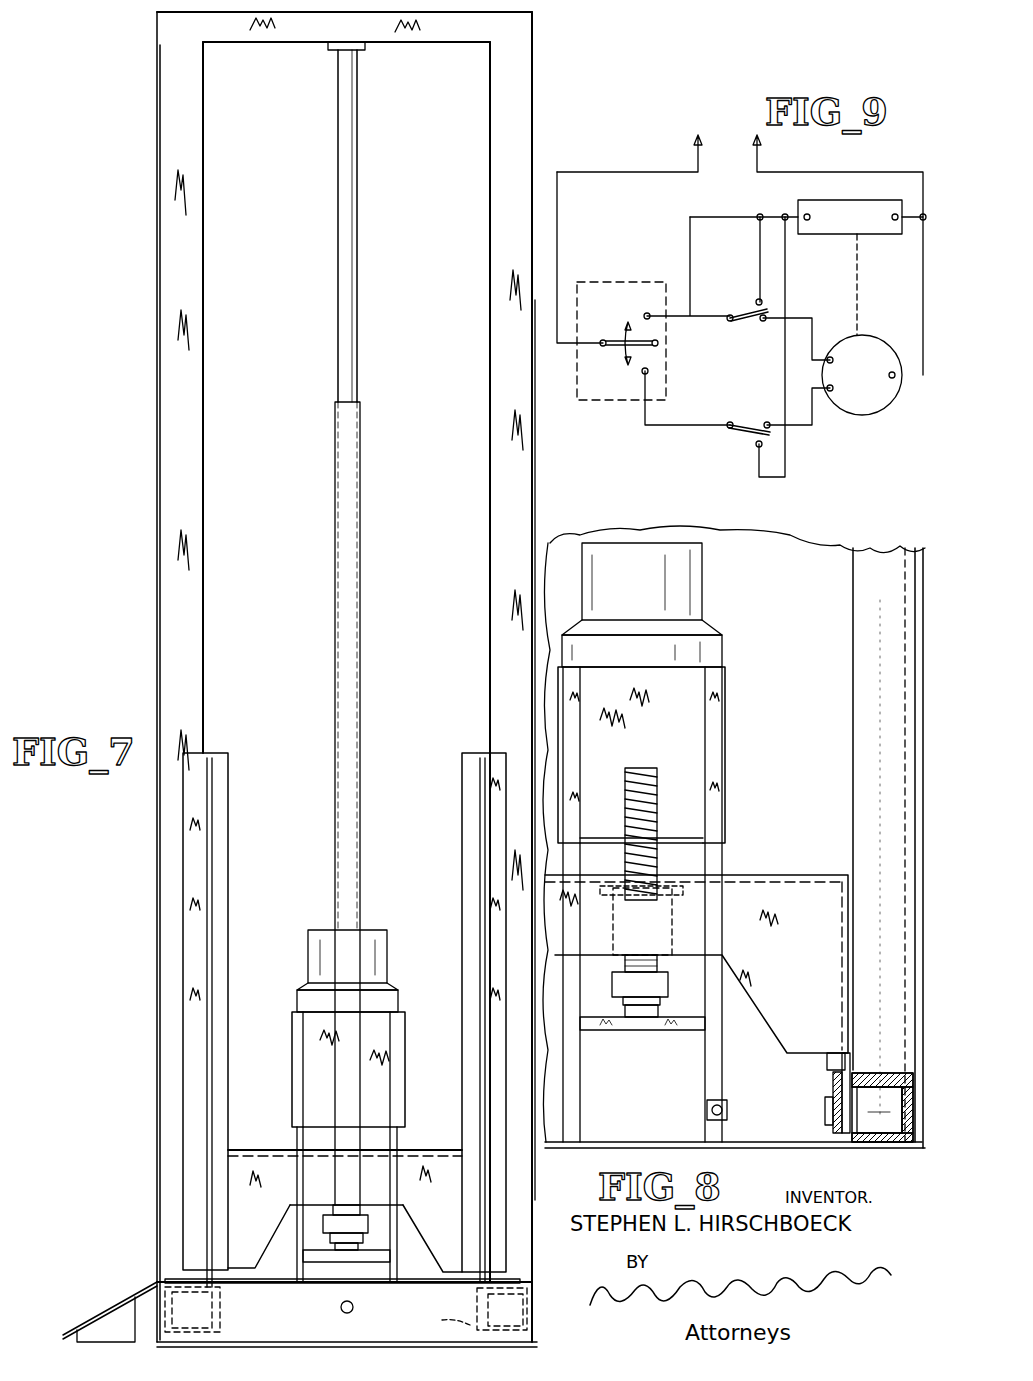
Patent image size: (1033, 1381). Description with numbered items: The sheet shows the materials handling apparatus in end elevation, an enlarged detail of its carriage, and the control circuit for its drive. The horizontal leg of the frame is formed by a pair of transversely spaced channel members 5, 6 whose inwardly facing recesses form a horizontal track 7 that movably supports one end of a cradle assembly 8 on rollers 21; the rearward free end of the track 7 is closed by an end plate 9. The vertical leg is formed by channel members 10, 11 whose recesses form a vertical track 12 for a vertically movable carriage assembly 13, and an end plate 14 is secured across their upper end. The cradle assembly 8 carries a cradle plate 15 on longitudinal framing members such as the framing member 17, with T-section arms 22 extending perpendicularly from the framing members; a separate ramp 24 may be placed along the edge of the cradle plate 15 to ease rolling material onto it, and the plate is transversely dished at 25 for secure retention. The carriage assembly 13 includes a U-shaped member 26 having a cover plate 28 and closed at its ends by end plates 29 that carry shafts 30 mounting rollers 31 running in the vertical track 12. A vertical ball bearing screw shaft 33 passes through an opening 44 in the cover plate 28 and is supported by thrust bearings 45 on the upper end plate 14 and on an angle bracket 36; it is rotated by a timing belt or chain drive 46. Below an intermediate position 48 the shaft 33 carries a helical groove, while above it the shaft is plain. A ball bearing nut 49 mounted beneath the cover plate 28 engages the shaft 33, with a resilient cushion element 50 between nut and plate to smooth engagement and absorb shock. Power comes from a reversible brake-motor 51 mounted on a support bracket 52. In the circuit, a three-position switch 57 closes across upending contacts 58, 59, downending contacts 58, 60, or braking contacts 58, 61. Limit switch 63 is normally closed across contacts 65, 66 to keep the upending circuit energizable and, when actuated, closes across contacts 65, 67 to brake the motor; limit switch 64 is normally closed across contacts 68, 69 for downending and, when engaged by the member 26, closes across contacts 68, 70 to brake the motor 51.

In FIG. 7, the channel member 5 is at (150, 1318).
In FIG. 7, the channel member 6 is at (533, 1318).
In FIG. 8, the channel member 6 is at (915, 1125).
In FIG. 7, the horizontal track 7 is at (170, 1298).
In FIG. 8, the horizontal track 7 is at (895, 1103).
In FIG. 7, the cradle assembly 8 is at (442, 1320).
In FIG. 8, the cradle assembly 8 is at (835, 1142).
In FIG. 7, the end plate 9 is at (185, 1344).
In FIG. 7, the channel member 10 is at (172, 425).
In FIG. 7, the channel member 11 is at (533, 465).
In FIG. 8, the channel member 11 is at (878, 688).
In FIG. 7, the vertical track 12 is at (205, 298).
In FIG. 8, the vertical track 12 is at (853, 625).
In FIG. 7, the carriage assembly 13 is at (436, 1152).
In FIG. 8, the carriage assembly 13 is at (770, 875).
In FIG. 7, the end plate 14 is at (455, 30).
In FIG. 7, the cradle plate 15 is at (515, 1278).
In FIG. 8, the framing member 17 is at (833, 1080).
In FIG. 7, the rollers 21 is at (210, 1312).
In FIG. 7, the T-section arms 22 is at (228, 760).
In FIG. 7, the ramp 24 is at (85, 1320).
In FIG. 7, the dished portion 25 is at (283, 1280).
In FIG. 7, the U-shaped member 26 is at (320, 1192).
In FIG. 8, the U-shaped member 26 is at (718, 924).
In FIG. 7, the cover plate 28 is at (410, 1150).
In FIG. 8, the cover plate 28 is at (820, 880).
In FIG. 8, the end plates 29 is at (840, 985).
In FIG. 8, the shafts 30 is at (825, 1110).
In FIG. 8, the rollers 31 is at (880, 1125).
In FIG. 7, the vertical ball bearing screw shaft 33 is at (345, 503).
In FIG. 8, the vertical ball bearing screw shaft 33 is at (658, 815).
In FIG. 7, the angle bracket 36 is at (392, 1258).
In FIG. 8, the angle bracket 36 is at (692, 1018).
In FIG. 8, the opening 44 is at (660, 888).
In FIG. 7, the thrust bearings 45 is at (330, 47).
In FIG. 8, the thrust bearings 45 is at (642, 1018).
In FIG. 7, the timing belt or chain drive 46 is at (368, 1225).
In FIG. 8, the timing belt or chain drive 46 is at (625, 988).
In FIG. 7, the intermediate position 48 is at (358, 402).
In FIG. 8, the ball bearing nut 49 is at (660, 940).
In FIG. 8, the resilient cushion element 50 is at (622, 888).
In FIG. 7, the reversible brake-motor 51 is at (385, 978).
In FIG. 9, the reversible brake-motor 51 is at (868, 342).
In FIG. 8, the reversible brake-motor 51 is at (705, 630).
In FIG. 7, the support bracket 52 is at (295, 1020).
In FIG. 8, the support bracket 52 is at (725, 682).
In FIG. 9, the three-position switch 57 is at (610, 347).
In FIG. 9, the contact 58 is at (603, 343).
In FIG. 9, the upending contact 59 is at (640, 316).
In FIG. 9, the downending contact 60 is at (648, 373).
In FIG. 9, the braking contact 61 is at (657, 346).
In FIG. 9, the limit switch 63 is at (745, 310).
In FIG. 8, the limit switch 63 is at (725, 1100).
In FIG. 9, the limit switch 64 is at (745, 434).
In FIG. 8, the limit switch 64 is at (832, 1055).
In FIG. 9, the contact 65 is at (727, 315).
In FIG. 9, the contact 66 is at (762, 325).
In FIG. 9, the contact 67 is at (765, 300).
In FIG. 9, the contact 68 is at (735, 422).
In FIG. 9, the contact 69 is at (768, 420).
In FIG. 9, the contact 70 is at (758, 447).